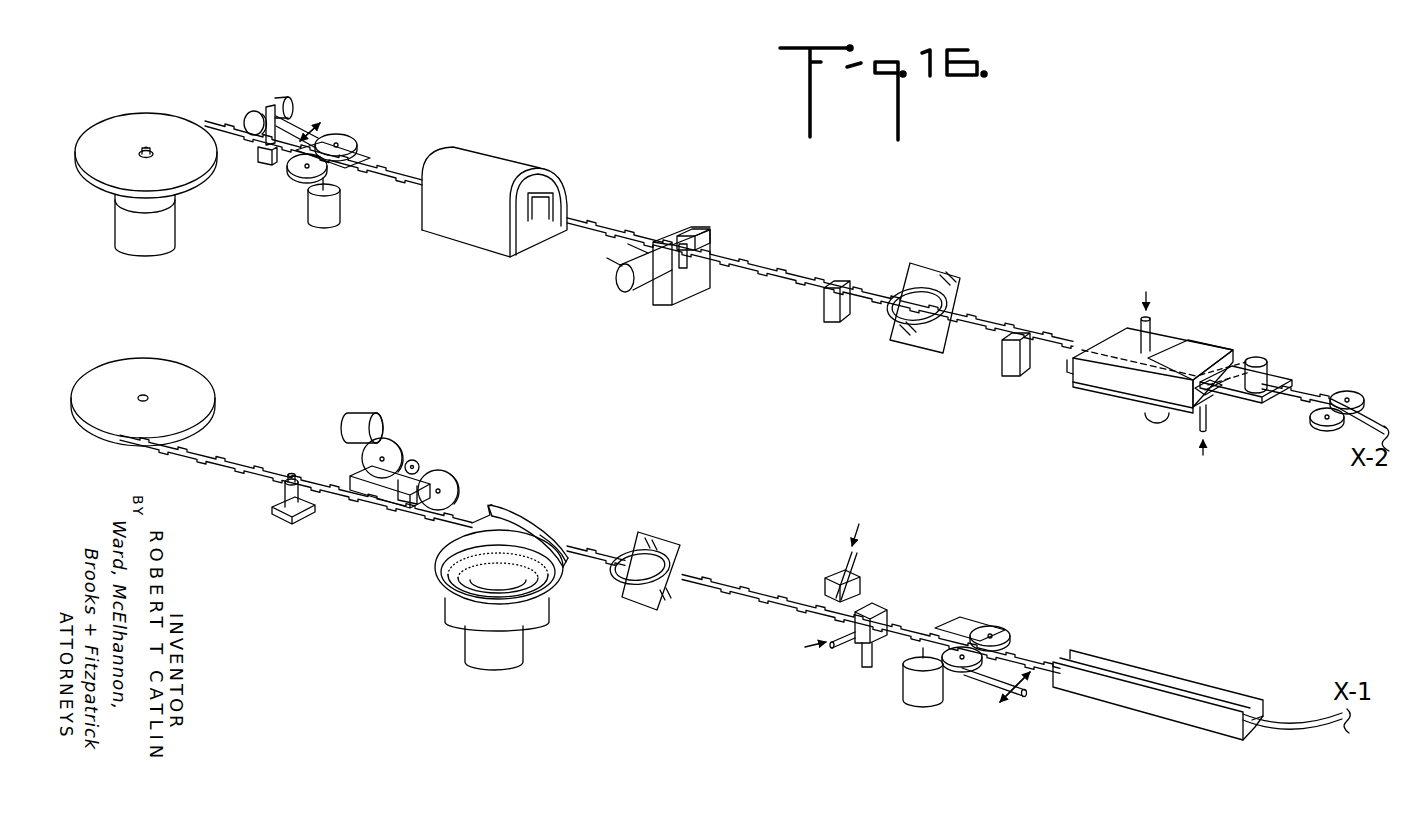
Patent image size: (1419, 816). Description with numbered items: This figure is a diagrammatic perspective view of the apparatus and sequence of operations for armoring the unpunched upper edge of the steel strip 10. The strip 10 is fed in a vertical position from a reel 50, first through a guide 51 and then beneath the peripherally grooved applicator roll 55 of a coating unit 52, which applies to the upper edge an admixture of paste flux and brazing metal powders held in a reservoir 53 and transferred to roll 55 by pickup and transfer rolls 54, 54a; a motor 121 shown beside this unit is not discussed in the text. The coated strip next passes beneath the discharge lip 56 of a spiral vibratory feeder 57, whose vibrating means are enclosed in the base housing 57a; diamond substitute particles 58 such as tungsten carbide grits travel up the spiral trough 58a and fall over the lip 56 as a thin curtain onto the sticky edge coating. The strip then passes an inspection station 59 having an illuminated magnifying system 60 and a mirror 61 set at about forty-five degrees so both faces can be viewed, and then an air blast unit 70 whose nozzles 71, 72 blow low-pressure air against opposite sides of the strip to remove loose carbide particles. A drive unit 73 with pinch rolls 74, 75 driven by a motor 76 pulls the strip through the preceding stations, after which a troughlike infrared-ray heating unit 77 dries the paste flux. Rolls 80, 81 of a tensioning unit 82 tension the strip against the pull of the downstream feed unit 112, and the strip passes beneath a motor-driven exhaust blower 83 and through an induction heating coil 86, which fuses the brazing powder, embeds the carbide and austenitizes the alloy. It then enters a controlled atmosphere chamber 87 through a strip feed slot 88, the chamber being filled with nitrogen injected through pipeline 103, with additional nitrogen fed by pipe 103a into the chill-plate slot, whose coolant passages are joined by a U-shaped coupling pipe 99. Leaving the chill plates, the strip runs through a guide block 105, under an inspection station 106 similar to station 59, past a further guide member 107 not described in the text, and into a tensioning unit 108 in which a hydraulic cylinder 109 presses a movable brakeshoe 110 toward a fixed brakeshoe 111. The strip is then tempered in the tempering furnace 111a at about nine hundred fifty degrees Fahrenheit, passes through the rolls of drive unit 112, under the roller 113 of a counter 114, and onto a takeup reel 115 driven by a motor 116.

The strip stock 10 is at (970, 322).
The reel 50 is at (166, 372).
The guide 51 is at (291, 472).
The coating unit 52 is at (373, 410).
The reservoir 53 is at (375, 491).
The pickup roll 54 is at (363, 457).
The transfer roll 54a is at (417, 460).
The peripherally grooved applicator roll 55 is at (455, 478).
The discharge lip 56 is at (496, 506).
The vibratory feeder 57 is at (440, 616).
The base housing 57a is at (482, 653).
The diamond substitute particles 58 is at (522, 518).
The spiral trough 58a is at (562, 544).
The inspection station 59 is at (653, 530).
The illuminated magnifying system 60 is at (665, 556).
The mirror 61 is at (641, 596).
The air blast unit 70 is at (873, 592).
The nozzle 71 is at (835, 575).
The nozzle 72 is at (851, 646).
The drive unit 73 is at (963, 623).
The pinch roll 74 is at (1002, 628).
The pinch roll 75 is at (965, 679).
The motor 76 is at (907, 691).
The infrared-ray heating unit 77 is at (1166, 669).
The roll 80 is at (1361, 395).
The roll 81 is at (1326, 428).
The tensioning unit 82 is at (1341, 379).
The motor-driven exhaust blower 83 is at (1275, 368).
The induction heating coil 86 is at (1195, 388).
The controlled atmosphere chamber 87 is at (1210, 349).
The strip feed slot 88 is at (1118, 346).
The U-shaped coupling pipe 99 is at (1157, 423).
The pipeline 103 is at (1210, 421).
The pipe 103a is at (1152, 322).
The guide block 105 is at (1019, 331).
The inspection station 106 is at (928, 272).
The guide clip 107 is at (841, 280).
The tensioning unit 108 is at (693, 226).
The hydraulic cylinder 109 is at (648, 288).
The movable brakeshoe 110 is at (688, 262).
The fixed brakeshoe 111 is at (706, 240).
The tempering furnace 111a is at (478, 166).
The drive unit 112 is at (345, 130).
The roller 113 is at (249, 112).
The counter 114 is at (284, 100).
The takeup reel 115 is at (130, 126).
The motor 116 is at (167, 238).
The motor 121 is at (354, 412).